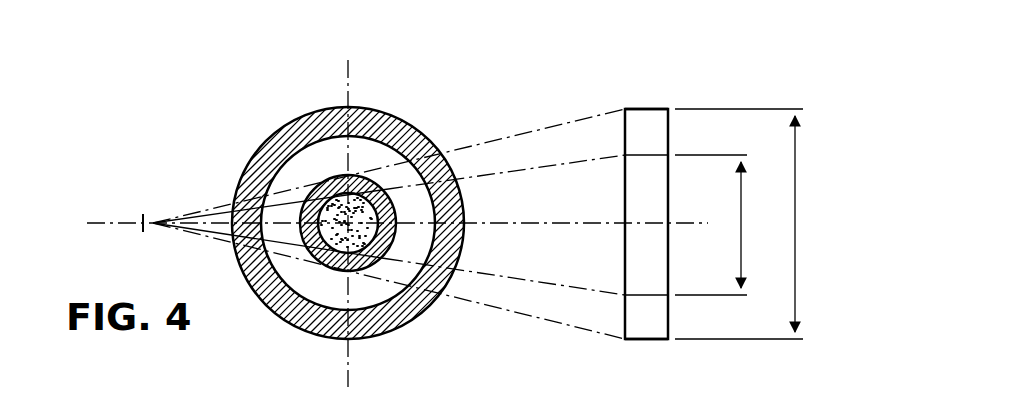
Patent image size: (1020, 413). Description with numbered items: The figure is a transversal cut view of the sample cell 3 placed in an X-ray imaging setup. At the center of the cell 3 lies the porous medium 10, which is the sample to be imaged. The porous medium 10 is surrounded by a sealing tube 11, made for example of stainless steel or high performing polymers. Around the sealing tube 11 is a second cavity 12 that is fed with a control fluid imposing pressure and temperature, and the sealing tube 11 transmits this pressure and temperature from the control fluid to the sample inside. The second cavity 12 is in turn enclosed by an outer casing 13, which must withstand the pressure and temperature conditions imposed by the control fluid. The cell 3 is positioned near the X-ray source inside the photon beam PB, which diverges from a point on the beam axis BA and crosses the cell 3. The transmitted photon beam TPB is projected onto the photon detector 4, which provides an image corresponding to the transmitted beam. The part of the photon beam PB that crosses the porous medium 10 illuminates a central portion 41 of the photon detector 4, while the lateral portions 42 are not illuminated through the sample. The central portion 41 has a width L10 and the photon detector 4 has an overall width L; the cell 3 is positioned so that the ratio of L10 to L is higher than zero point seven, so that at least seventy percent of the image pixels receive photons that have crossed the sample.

The cell 3 is at (262, 118).
The outer casing 13 is at (377, 128).
The second cavity 12 is at (386, 149).
The sealing tube 11 is at (333, 180).
The porous medium 10 is at (356, 240).
The photon detector 4 is at (643, 109).
The central portion of the photon detector 41 is at (652, 249).
The lateral portions of the photon detector 42 is at (648, 122).
The photon beam PB is at (185, 213).
The transmitted photon beam TPB is at (542, 126).
The beam axis BA is at (693, 217).
The width of the photon detector L is at (744, 224).
The width of the central portion L10 is at (729, 225).